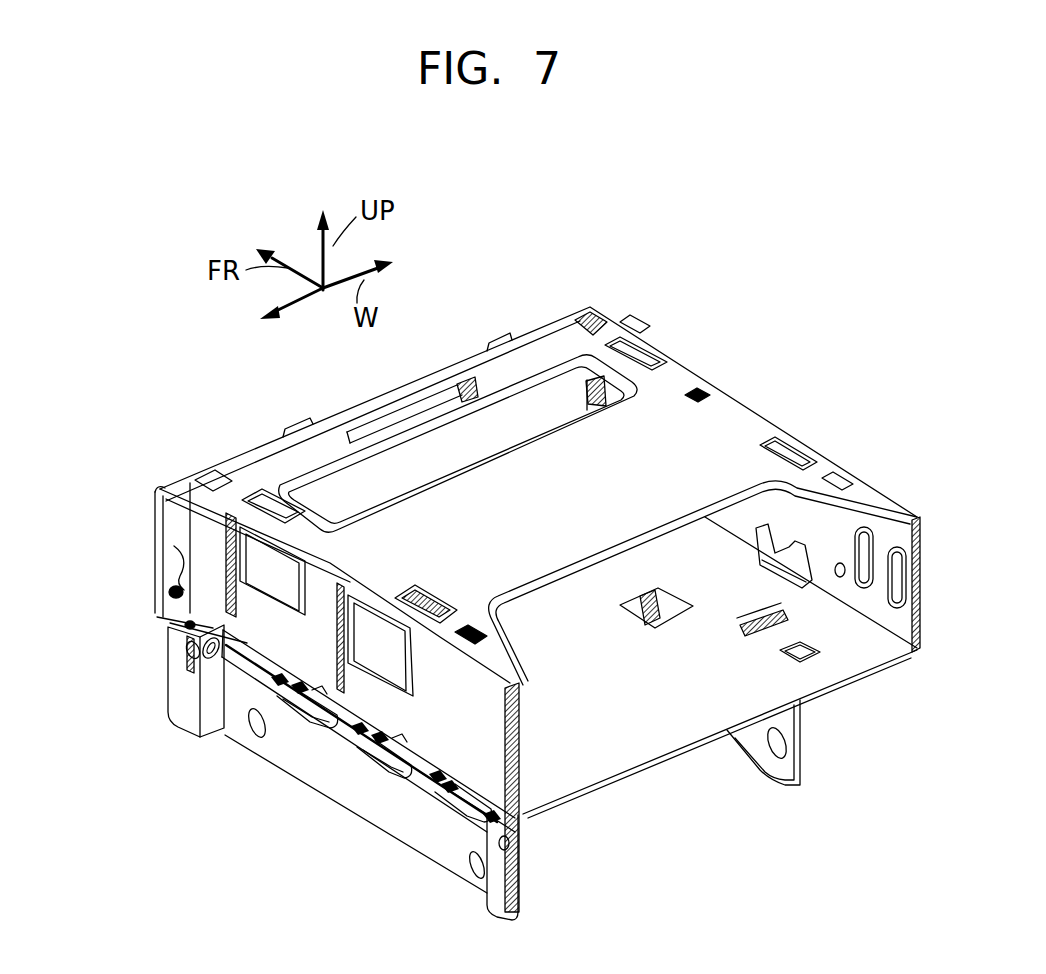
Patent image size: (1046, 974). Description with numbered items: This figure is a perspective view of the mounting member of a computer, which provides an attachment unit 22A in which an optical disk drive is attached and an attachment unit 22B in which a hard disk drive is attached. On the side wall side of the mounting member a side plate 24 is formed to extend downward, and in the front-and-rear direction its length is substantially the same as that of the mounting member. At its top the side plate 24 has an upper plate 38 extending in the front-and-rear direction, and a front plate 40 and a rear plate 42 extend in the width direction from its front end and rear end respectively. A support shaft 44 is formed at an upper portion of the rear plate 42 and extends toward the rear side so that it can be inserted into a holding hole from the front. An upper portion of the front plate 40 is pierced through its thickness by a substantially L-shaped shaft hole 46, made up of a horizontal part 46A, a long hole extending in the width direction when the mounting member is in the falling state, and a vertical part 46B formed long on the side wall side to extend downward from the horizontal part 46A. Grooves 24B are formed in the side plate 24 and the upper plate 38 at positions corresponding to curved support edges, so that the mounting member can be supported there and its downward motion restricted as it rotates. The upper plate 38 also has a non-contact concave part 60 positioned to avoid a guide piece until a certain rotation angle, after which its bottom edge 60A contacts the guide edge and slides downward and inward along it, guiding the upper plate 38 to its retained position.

The attachment unit 22A is at (776, 680).
The attachment unit 22B is at (713, 808).
The side plate 24 is at (418, 796).
The grooves 24B is at (292, 697).
The upper plate 38 is at (476, 793).
The front plate 40 is at (187, 728).
The rear plate 42 is at (520, 910).
The support shaft 44 is at (511, 843).
The shaft hole 46 is at (131, 662).
The horizontal part 46A is at (190, 647).
The vertical part 46B is at (200, 658).
The non-contact concave part 60 is at (337, 708).
The bottom edge 60A is at (316, 690).